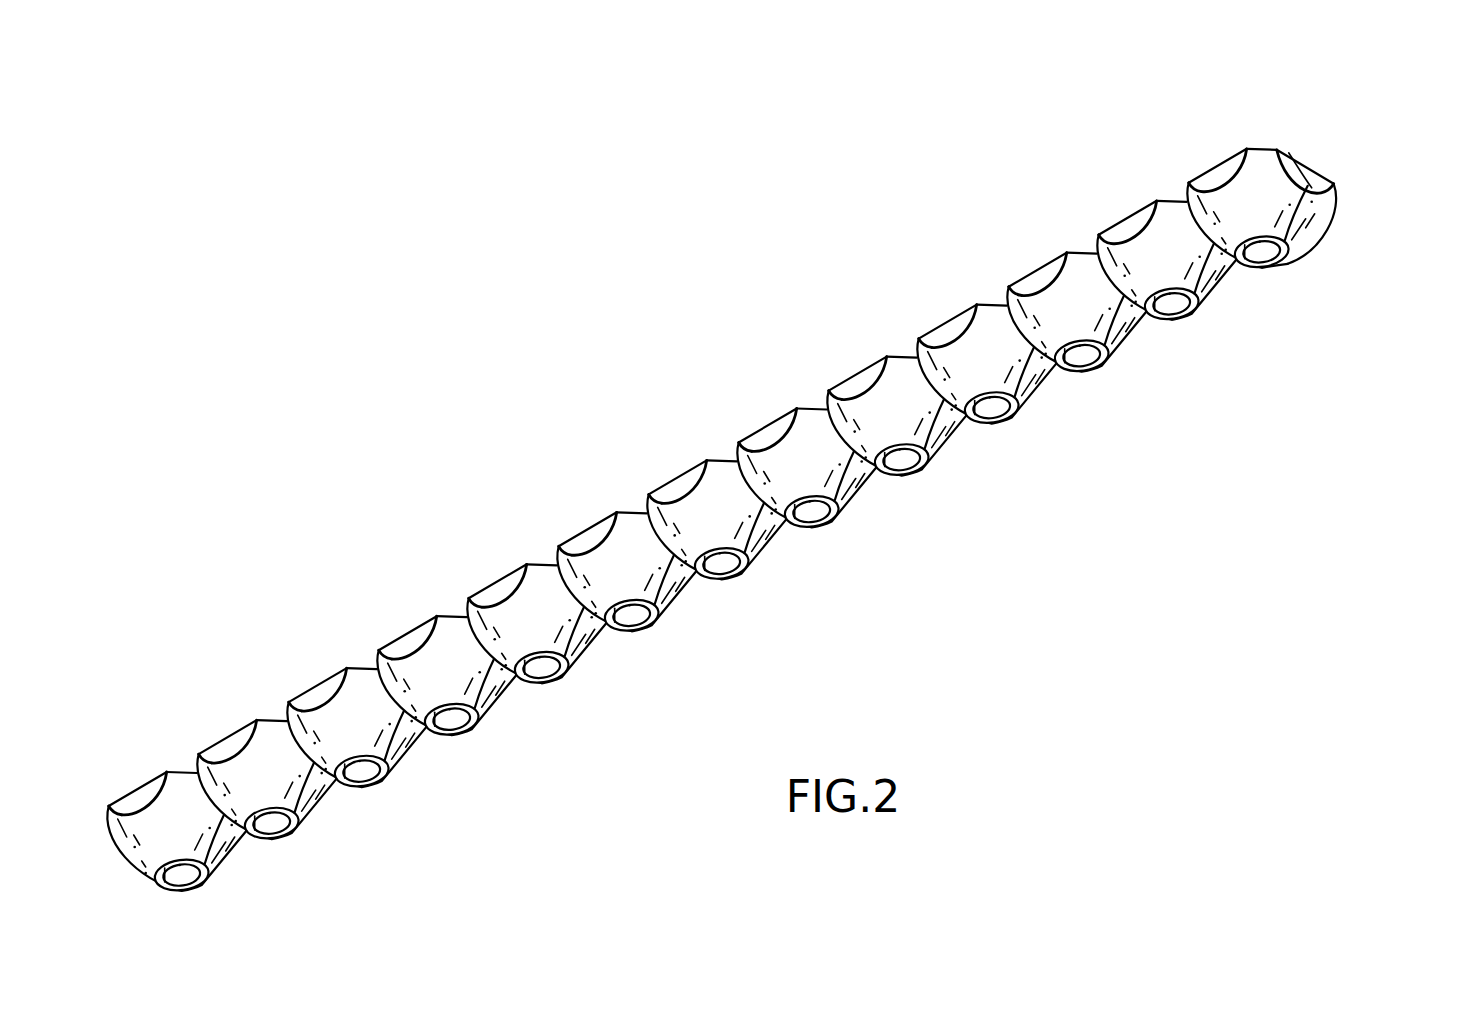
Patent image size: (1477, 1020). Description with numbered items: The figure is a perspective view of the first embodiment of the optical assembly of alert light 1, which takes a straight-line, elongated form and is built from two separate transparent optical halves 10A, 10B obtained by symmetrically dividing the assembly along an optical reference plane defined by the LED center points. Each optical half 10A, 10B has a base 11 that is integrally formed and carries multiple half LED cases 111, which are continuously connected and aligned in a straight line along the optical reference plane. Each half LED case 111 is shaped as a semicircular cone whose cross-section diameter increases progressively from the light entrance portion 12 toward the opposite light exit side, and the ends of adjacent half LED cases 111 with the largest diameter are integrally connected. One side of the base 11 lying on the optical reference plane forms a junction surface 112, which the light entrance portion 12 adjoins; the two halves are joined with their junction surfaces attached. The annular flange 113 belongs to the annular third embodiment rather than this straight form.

The optical assembly of alert light 1 is at (785, 459).
The optical half 10A is at (1228, 194).
The optical half 10B is at (1200, 145).
The base 11 is at (1228, 194).
The half LED case 111 is at (1212, 202).
The junction surface 112 is at (1289, 152).
The annular flange 113 is at (1262, 150).
The light entrance portion 12 is at (1287, 264).